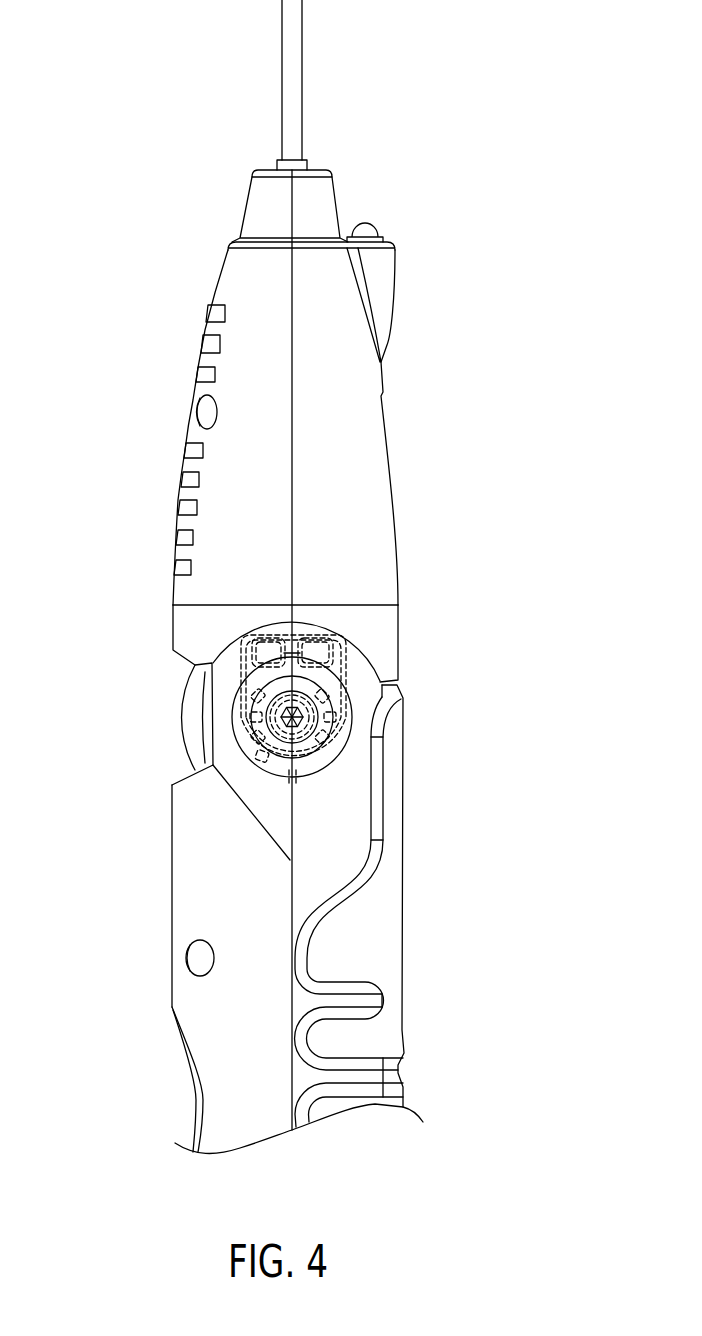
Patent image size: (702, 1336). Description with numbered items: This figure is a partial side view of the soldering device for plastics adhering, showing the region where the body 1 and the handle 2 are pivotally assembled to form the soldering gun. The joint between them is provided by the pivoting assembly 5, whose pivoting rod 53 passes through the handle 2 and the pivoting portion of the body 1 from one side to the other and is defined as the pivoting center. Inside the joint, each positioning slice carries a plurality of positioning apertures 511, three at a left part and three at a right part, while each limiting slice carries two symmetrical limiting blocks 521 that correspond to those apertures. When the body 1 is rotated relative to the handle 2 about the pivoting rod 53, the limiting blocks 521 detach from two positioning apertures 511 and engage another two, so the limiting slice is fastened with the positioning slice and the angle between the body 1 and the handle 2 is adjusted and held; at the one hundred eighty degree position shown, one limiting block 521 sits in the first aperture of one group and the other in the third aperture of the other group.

The body 1 is at (423, 450).
The handle 2 is at (435, 963).
The pivoting assembly 5 is at (255, 703).
The positioning apertures 511 is at (242, 735).
The limiting blocks 521 is at (240, 682).
The pivoting rod 53 is at (305, 712).